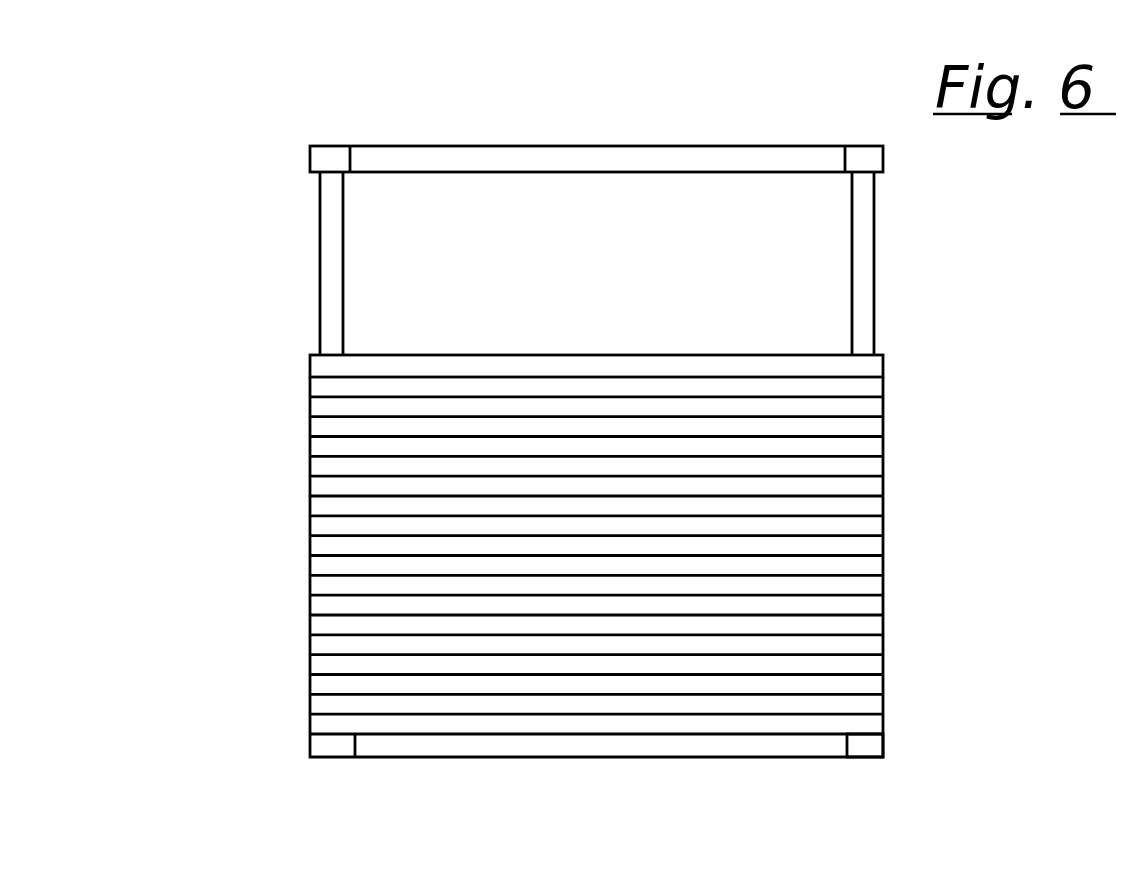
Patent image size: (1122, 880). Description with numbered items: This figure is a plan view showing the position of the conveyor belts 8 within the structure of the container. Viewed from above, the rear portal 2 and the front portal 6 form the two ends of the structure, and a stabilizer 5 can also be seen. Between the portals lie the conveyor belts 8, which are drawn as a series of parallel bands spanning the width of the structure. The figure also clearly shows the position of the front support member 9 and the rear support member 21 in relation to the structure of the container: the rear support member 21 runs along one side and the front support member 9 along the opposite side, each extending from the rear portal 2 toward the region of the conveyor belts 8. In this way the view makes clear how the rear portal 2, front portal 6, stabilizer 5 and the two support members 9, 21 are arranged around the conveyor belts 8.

The rear portal 2 is at (310, 159).
The rear support member 21 is at (320, 285).
The front support member 9 is at (874, 283).
The conveyor belts 8 is at (883, 402).
The stabilizer 5 is at (567, 751).
The front portal 6 is at (886, 750).